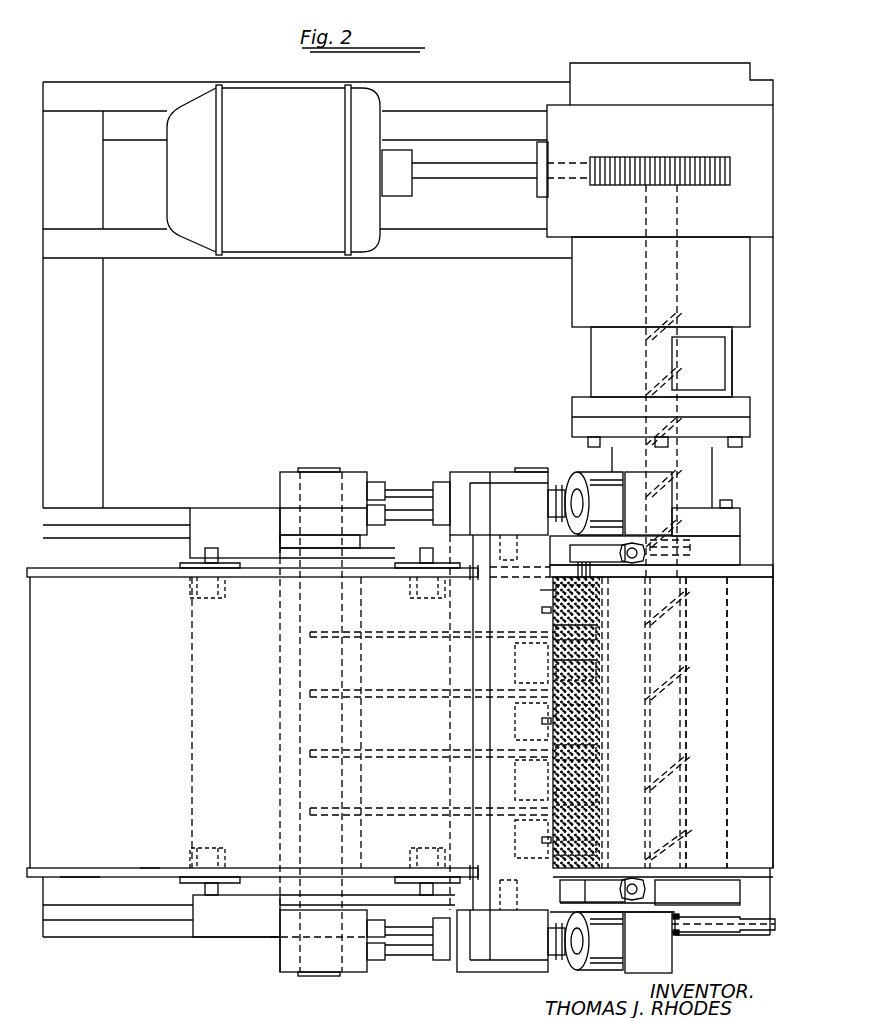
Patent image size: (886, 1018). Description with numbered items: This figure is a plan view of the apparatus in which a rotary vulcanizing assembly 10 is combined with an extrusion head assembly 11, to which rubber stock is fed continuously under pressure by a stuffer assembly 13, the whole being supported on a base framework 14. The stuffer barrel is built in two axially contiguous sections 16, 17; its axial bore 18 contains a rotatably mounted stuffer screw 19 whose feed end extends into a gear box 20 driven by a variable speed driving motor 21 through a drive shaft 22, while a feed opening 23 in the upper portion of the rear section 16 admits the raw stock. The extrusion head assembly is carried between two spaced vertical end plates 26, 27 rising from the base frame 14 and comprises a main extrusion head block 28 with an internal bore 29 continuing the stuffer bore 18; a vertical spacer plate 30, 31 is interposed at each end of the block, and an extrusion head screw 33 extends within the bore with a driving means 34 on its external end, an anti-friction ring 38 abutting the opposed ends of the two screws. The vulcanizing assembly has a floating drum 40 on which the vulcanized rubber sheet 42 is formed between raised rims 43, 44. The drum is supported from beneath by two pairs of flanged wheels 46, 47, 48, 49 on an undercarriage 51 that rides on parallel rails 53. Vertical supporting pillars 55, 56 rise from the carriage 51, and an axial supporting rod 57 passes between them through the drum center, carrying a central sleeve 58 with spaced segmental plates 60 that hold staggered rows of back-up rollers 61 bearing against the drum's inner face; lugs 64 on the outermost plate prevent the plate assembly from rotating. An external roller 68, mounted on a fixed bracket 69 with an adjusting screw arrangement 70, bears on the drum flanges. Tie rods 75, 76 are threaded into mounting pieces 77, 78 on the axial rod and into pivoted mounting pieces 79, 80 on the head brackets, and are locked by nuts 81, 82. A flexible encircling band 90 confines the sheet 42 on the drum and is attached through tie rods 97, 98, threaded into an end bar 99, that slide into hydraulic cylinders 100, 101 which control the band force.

The rotary vulcanizing assembly 10 is at (163, 964).
The extrusion head assembly 11 is at (738, 944).
The stuffer assembly 13 is at (586, 372).
The base framework 14 is at (88, 95).
The stuffer barrel rear section 16 is at (740, 349).
The stuffer barrel forward section 17 is at (712, 478).
The axial bore 18 is at (640, 350).
The stuffer screw 19 is at (646, 376).
The gear box 20 is at (556, 110).
The variable speed driving motor 21 is at (258, 100).
The drive shaft 22 is at (424, 182).
The feed opening 23 is at (722, 362).
The vertical end plate 26 is at (740, 893).
The vertical end plate 27 is at (739, 558).
The main extrusion head block 28 is at (728, 620).
The internal bore 29 is at (690, 778).
The vertical spacer plate 30 is at (745, 722).
The vertical spacer plate 31 is at (738, 578).
The extrusion head screw 33 is at (688, 841).
The driving means 34 is at (719, 928).
The interposed ring 38 is at (672, 548).
The floating drum 40 is at (80, 883).
The vulcanized rubber sheet 42 is at (760, 712).
The drum rim 43 is at (118, 868).
The drum rim 44 is at (108, 578).
The flanged wheel 46 is at (183, 880).
The flanged wheel 47 is at (405, 884).
The flanged wheel 48 is at (178, 566).
The flanged wheel 49 is at (406, 560).
The undercarriage 51 is at (210, 938).
The rails 53 is at (140, 530).
The vertical supporting pillar 55 is at (240, 899).
The vertical supporting pillar 56 is at (246, 555).
The axial supporting rod 57 is at (315, 975).
The central sleeve 58 is at (280, 735).
The segmental plates 60 is at (400, 815).
The back-up rollers 61 is at (529, 718).
The laterally projecting lugs 64 is at (600, 546).
The lower external roller 68 is at (553, 592).
The fixed bracket 69 is at (558, 900).
The adjusting screw arrangement 70 is at (645, 565).
The tie rod 75 is at (406, 958).
The tie rod 76 is at (405, 490).
The mounting piece 77 is at (285, 975).
The mounting piece 78 is at (283, 478).
The mounting piece 79 is at (518, 975).
The mounting piece 80 is at (462, 480).
The nut 81 is at (381, 965).
The nut 82 is at (446, 965).
The encircling band 90 is at (151, 868).
The adjustable tie rod 97 is at (563, 970).
The adjustable tie rod 98 is at (556, 490).
The end bar 99 is at (500, 960).
The hydraulic cylinder 100 is at (591, 973).
The hydraulic cylinder 101 is at (601, 478).